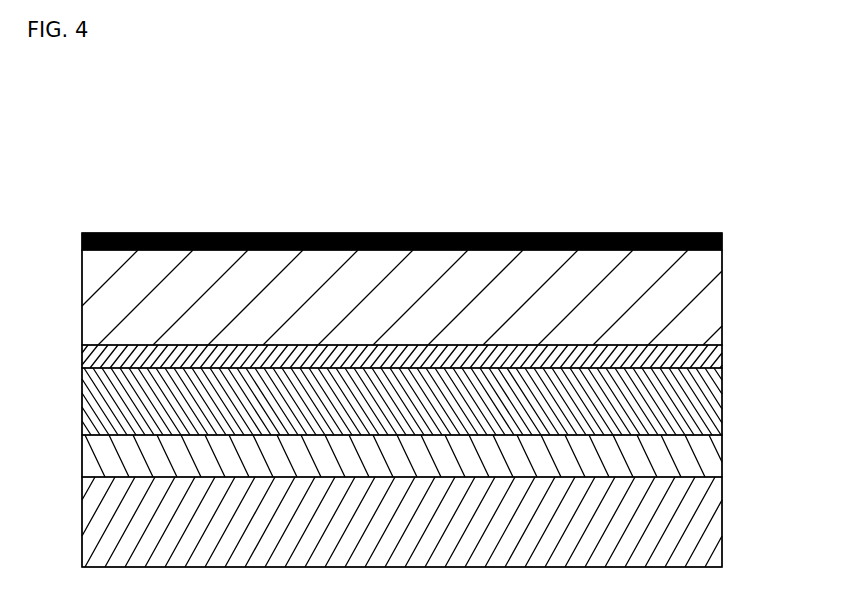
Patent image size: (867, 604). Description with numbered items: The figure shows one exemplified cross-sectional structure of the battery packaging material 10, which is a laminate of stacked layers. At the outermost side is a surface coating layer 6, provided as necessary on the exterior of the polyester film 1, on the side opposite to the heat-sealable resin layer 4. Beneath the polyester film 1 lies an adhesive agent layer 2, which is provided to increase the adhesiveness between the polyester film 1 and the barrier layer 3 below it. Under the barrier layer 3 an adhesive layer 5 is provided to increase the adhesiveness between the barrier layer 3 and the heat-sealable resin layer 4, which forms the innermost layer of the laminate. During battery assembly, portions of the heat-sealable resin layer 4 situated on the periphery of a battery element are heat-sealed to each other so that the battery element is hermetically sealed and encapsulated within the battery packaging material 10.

The battery packaging material 10 is at (592, 187).
The surface coating layer 6 is at (722, 242).
The polyester film 1 is at (722, 295).
The adhesive agent layer 2 is at (722, 360).
The barrier layer 3 is at (722, 406).
The adhesive layer 5 is at (722, 455).
The heat-sealable resin layer 4 is at (722, 503).